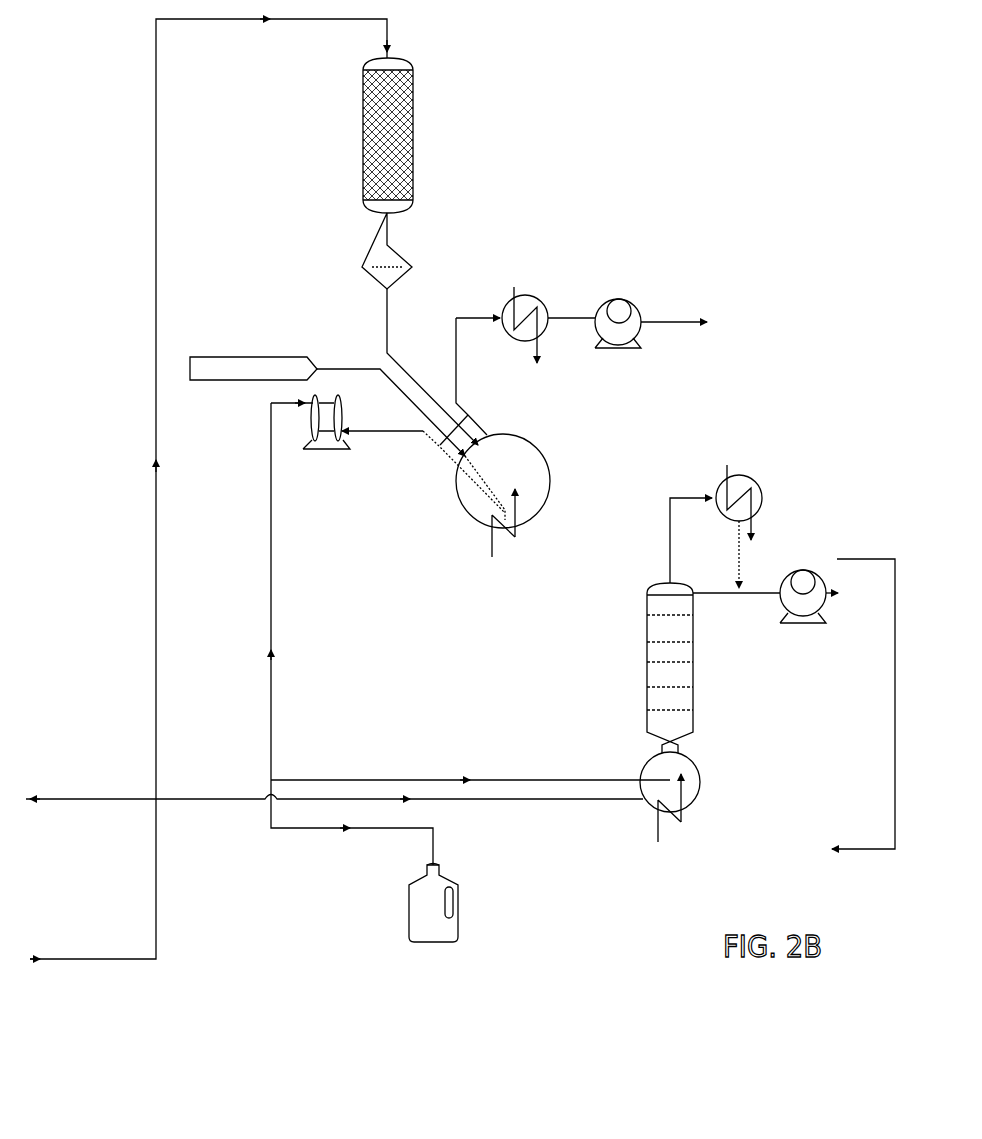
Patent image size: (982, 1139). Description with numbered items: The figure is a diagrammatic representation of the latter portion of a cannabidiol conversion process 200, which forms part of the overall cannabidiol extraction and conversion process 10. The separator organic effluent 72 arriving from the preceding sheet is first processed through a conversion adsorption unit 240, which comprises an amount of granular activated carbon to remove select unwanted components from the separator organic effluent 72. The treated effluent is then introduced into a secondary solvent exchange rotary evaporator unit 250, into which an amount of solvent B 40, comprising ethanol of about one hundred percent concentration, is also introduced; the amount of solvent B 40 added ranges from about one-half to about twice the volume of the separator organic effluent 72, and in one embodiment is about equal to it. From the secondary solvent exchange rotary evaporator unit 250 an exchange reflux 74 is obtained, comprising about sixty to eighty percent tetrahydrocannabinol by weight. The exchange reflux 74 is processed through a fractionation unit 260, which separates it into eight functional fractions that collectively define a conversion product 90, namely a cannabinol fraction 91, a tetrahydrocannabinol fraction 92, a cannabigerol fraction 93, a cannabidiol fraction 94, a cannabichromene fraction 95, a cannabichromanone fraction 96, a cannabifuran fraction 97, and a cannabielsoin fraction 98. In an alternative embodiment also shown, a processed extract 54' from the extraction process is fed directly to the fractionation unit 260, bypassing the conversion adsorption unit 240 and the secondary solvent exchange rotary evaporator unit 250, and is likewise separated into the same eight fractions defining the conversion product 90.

The cannabidiol extraction and conversion process 10 is at (725, 163).
The solvent B 40 is at (327, 406).
The separator organic effluent 72 is at (208, 503).
The exchange reflux 74 is at (271, 620).
The processed extract 54' is at (334, 797).
The conversion product 90 is at (895, 708).
The cannabinol (CBN) fraction 91 is at (781, 596).
The tetrahydrocannabinol (THC) fraction 92 is at (693, 615).
The cannabigerol (CBG) fraction 93 is at (693, 642).
The cannabidiol (CBD) fraction 94 is at (693, 662).
The cannabichromene (CBC) fraction 95 is at (693, 687).
The cannabichromanone (CBCN) fraction 96 is at (693, 710).
The cannabifuran (CBF) fraction 97 is at (696, 669).
The cannabielsoin (CBE) fraction 98 is at (670, 800).
The cannabidiol conversion process 200 is at (478, 988).
The conversion adsorption unit 240 is at (423, 125).
The secondary solvent exchange rotary evaporator unit 250 is at (553, 458).
The fractionation unit 260 is at (612, 668).